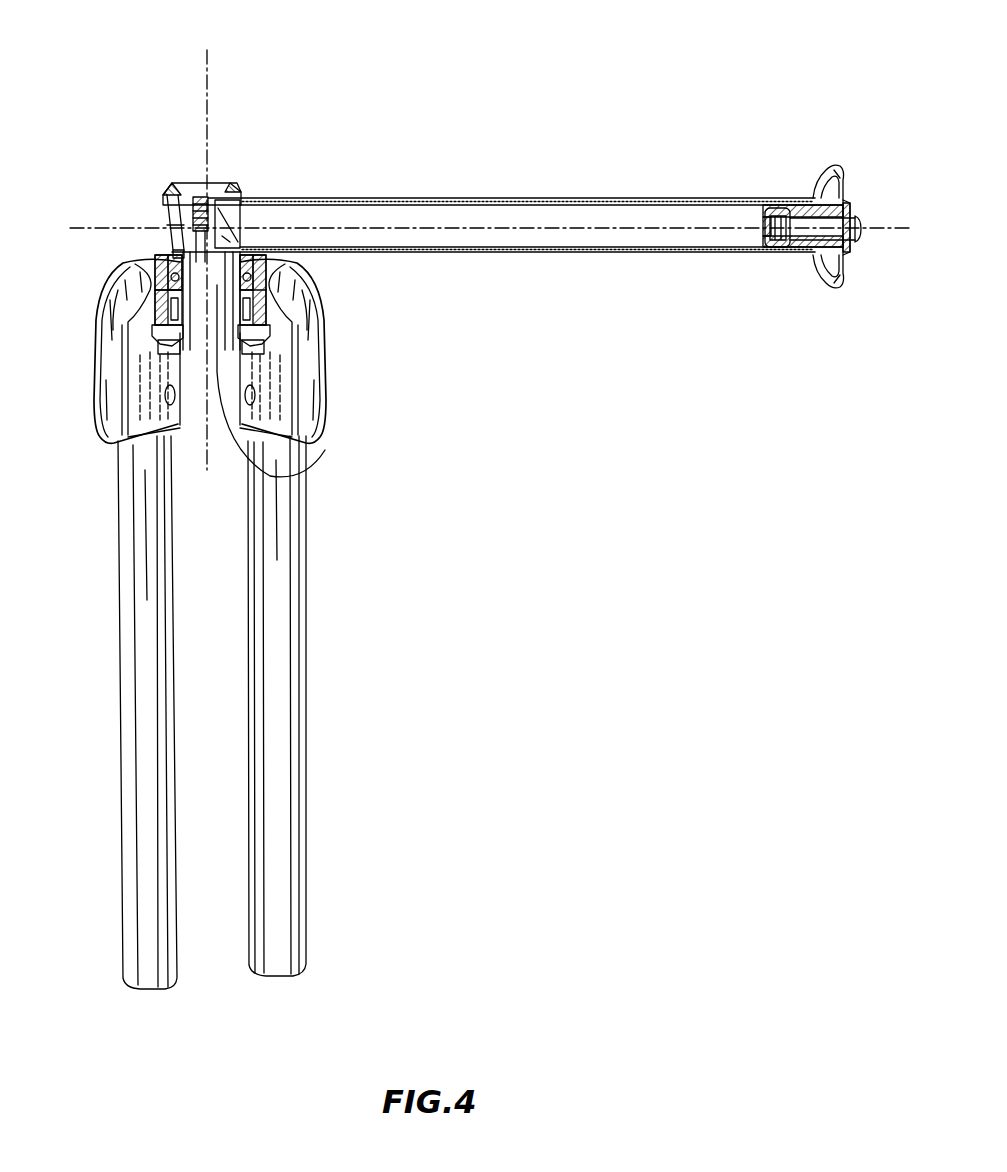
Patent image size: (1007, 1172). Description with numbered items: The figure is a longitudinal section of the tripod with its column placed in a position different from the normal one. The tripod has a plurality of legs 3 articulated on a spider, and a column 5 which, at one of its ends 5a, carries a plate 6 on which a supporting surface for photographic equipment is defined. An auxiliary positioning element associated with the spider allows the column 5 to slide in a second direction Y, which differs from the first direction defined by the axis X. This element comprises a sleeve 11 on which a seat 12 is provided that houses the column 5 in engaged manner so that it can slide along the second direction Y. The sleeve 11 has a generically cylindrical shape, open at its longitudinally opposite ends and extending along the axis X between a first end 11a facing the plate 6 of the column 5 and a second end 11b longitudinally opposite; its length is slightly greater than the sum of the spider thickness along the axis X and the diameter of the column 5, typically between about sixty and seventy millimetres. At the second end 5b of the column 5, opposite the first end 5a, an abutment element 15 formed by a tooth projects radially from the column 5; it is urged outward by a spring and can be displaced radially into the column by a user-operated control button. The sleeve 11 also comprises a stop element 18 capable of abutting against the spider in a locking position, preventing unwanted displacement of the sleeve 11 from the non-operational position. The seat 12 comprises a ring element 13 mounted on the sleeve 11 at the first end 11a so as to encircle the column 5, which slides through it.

The legs 3 is at (137, 652).
The column 5 is at (543, 197).
The first end of the column 5a is at (812, 262).
The second end of the column 5b is at (173, 230).
The plate 6 is at (814, 182).
The sleeve 11 is at (181, 183).
The first end of the sleeve 11a is at (232, 191).
The second end of the sleeve 11b is at (325, 450).
The seat 12 is at (166, 246).
The ring element 13 is at (266, 262).
The abutment element 15 is at (198, 260).
The stop element 18 is at (150, 283).